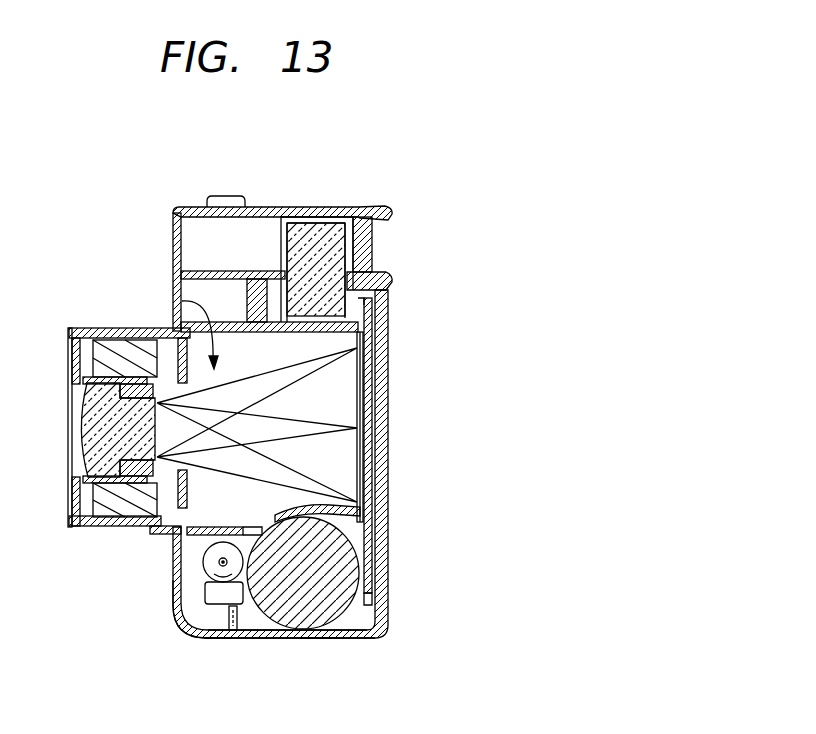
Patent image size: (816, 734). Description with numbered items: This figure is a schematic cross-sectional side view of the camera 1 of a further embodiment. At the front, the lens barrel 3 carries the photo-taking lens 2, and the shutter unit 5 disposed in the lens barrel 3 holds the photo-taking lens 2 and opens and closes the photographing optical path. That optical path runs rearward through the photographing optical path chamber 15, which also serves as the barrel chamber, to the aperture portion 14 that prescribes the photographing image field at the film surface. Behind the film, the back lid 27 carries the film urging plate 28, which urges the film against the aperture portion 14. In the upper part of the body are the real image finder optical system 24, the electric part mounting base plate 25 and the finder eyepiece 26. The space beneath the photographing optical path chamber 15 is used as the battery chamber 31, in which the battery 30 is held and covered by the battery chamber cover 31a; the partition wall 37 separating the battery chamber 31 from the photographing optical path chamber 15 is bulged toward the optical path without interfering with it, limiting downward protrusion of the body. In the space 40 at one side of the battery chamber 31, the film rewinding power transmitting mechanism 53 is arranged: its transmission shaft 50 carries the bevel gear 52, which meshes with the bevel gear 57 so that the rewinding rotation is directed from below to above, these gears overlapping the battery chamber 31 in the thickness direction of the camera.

The camera 1 is at (386, 190).
The photo-taking lens 2 is at (82, 420).
The lens barrel 3 is at (105, 328).
The shutter unit 5 is at (110, 527).
The aperture portion 14 is at (355, 400).
The photographing optical path chamber 15 is at (180, 301).
The real image finder optical system 24 is at (321, 237).
The electric part mounting base plate 25 is at (300, 228).
The finder eyepiece 26 is at (365, 252).
The back lid 27 is at (386, 500).
The film urging plate 28 is at (370, 452).
The battery 30 is at (330, 603).
The battery chamber 31 is at (253, 639).
The battery chamber cover 31a is at (317, 639).
The partition wall 37 is at (300, 518).
The space 40 is at (181, 630).
The transmission shaft 50 is at (195, 580).
The bevel gear 52 is at (204, 556).
The film rewinding power transmitting mechanism 53 is at (219, 565).
The bevel gear 57 is at (212, 636).